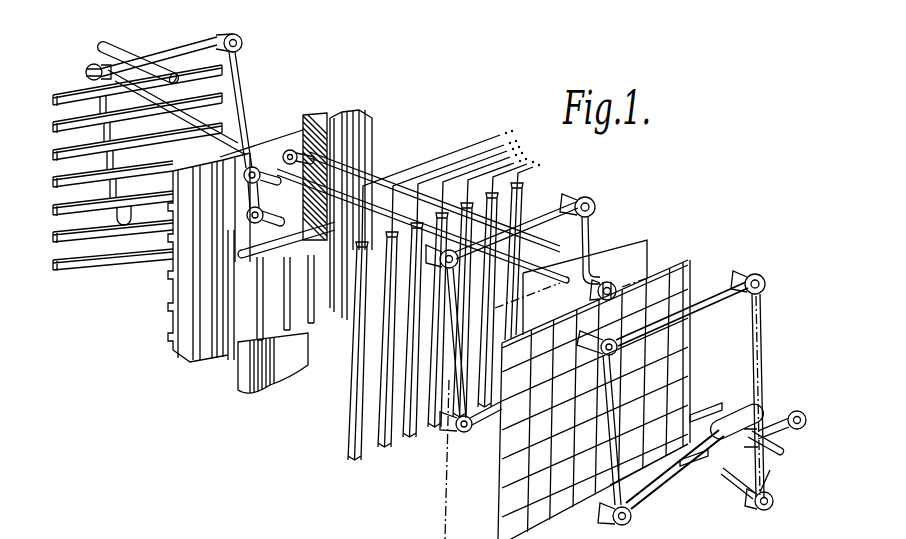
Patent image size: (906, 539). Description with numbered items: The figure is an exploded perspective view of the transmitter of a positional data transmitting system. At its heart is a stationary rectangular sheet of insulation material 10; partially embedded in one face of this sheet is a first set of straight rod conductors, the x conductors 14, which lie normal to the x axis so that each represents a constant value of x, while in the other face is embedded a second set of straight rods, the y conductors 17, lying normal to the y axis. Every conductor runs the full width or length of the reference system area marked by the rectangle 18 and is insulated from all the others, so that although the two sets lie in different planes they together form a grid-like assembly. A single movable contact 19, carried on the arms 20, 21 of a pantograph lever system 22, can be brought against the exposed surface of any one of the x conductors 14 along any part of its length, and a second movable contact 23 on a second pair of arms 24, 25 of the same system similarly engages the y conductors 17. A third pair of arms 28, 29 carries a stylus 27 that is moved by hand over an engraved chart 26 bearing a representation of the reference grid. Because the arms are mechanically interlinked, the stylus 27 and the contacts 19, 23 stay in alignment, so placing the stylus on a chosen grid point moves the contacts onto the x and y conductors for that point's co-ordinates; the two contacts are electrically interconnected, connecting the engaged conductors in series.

The sheet of insulation material 10 is at (343, 112).
The x conductors 14 is at (519, 238).
The y conductors 17 is at (69, 95).
The rectangle 18 is at (649, 249).
The movable contact 19 is at (396, 234).
The arm 20 is at (545, 203).
The arm 21 is at (452, 286).
The pantograph lever system 22 is at (772, 489).
The second movable contact 23 is at (93, 67).
The arm 24 is at (181, 42).
The arm 25 is at (65, 93).
The engraved chart 26 is at (673, 292).
The stylus 27 is at (594, 348).
The arm 28 is at (723, 280).
The arm 29 is at (688, 358).